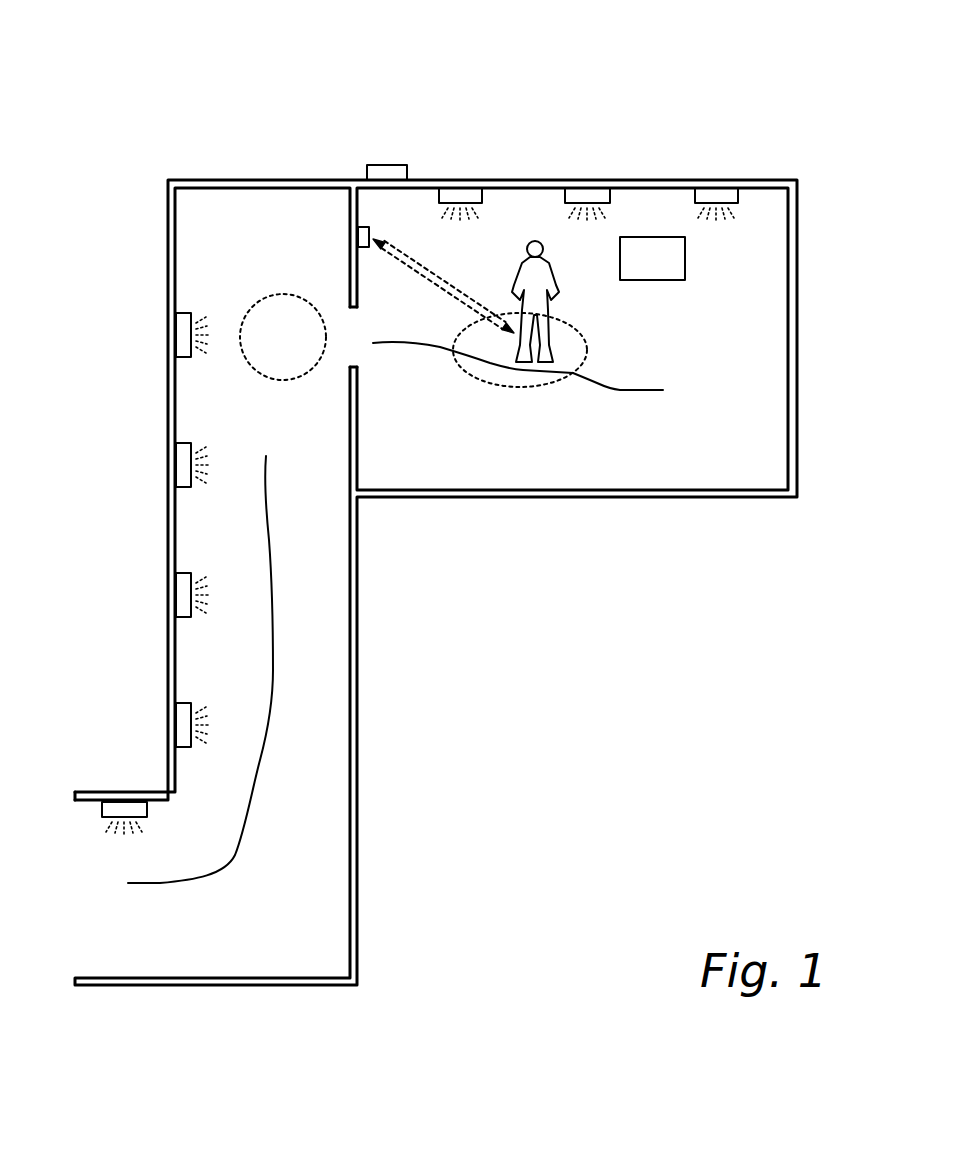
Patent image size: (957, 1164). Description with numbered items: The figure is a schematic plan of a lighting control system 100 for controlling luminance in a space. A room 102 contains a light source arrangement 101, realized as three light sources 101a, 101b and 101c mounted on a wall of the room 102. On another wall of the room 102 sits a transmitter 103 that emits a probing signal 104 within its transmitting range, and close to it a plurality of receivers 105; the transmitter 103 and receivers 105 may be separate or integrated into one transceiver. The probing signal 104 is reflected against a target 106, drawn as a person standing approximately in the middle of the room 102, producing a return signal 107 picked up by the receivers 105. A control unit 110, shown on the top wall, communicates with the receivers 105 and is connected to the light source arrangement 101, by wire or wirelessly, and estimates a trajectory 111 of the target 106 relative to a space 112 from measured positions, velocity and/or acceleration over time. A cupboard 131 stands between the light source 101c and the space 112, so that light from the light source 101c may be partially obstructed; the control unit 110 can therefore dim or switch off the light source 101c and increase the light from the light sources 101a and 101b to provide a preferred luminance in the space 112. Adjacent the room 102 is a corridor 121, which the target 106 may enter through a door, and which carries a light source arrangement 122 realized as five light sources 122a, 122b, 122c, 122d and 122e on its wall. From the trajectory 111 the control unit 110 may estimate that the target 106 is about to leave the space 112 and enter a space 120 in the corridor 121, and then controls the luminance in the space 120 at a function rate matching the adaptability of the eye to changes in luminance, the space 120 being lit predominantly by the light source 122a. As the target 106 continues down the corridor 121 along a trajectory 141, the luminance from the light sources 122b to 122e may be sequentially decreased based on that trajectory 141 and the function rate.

The lighting control system 100 is at (728, 90).
The light source arrangement 101 is at (450, 195).
The light source 101a is at (478, 195).
The light source 101b is at (590, 195).
The light source 101c is at (712, 195).
The room 102 is at (797, 300).
The transmitter 103 is at (358, 238).
The plurality of receivers 105 is at (363, 237).
The probing signal 104 is at (442, 283).
The return signal 107 is at (432, 283).
The target 106 is at (557, 280).
The control unit 110 is at (390, 170).
The trajectory 111 is at (640, 392).
The space 112 is at (487, 382).
The space 120 is at (280, 378).
The corridor 121 is at (240, 178).
The light source arrangement 122 is at (181, 325).
The light source 122a is at (180, 347).
The light source 122b is at (178, 468).
The light source 122c is at (178, 598).
The light source 122d is at (178, 728).
The light source 122e is at (115, 805).
The cupboard 131 is at (685, 252).
The trajectory 141 is at (270, 552).